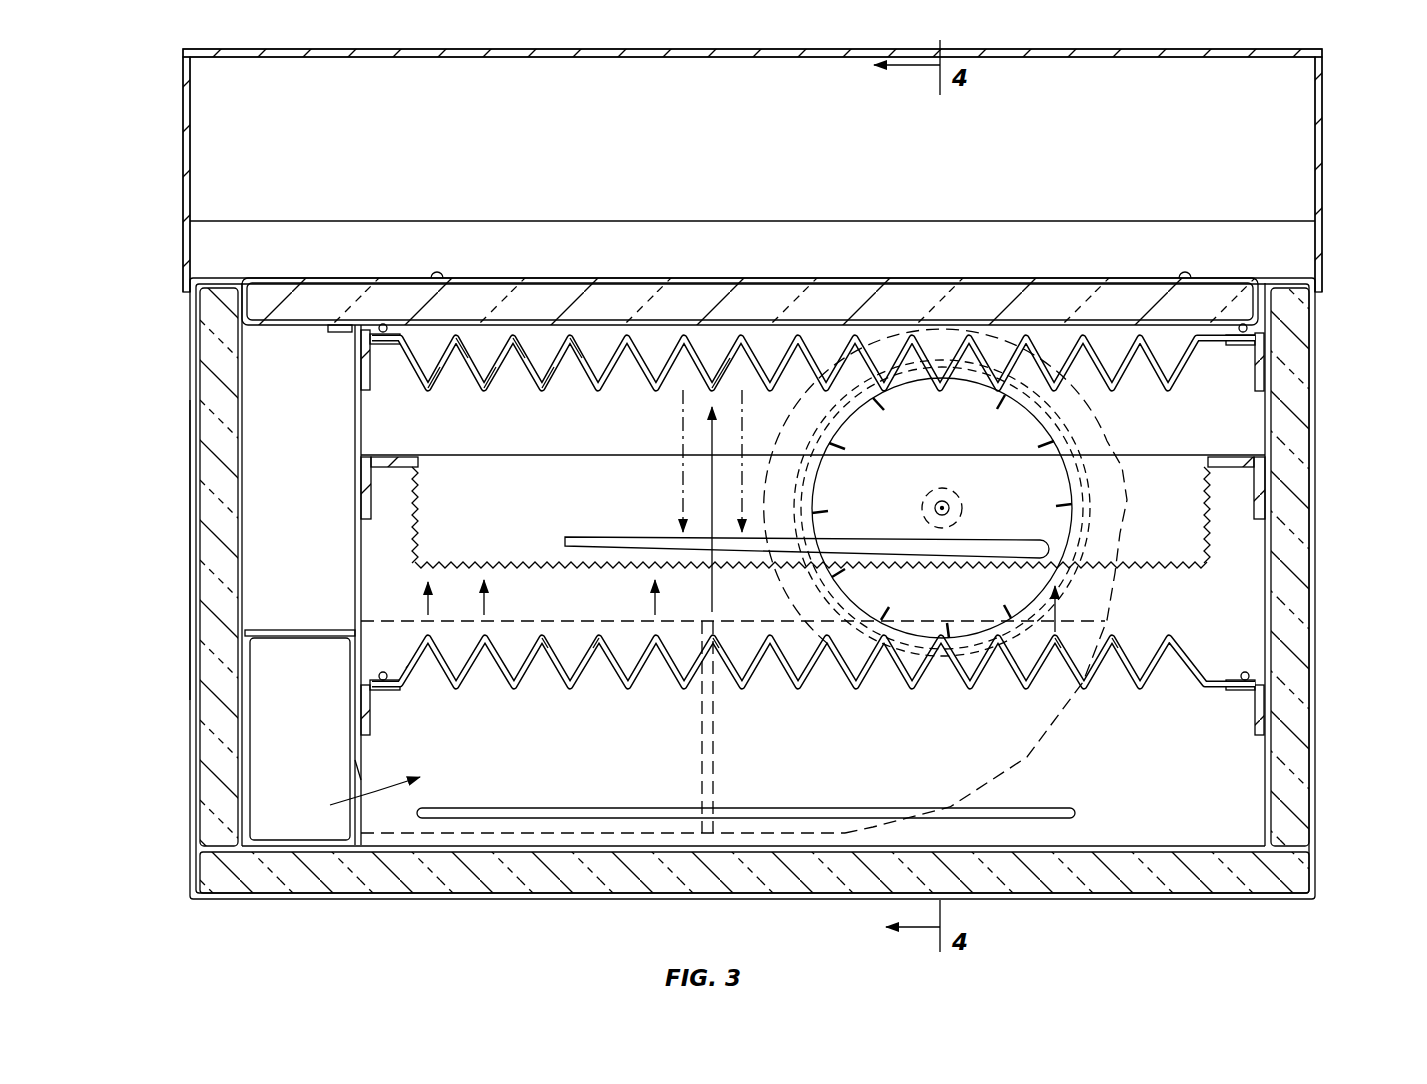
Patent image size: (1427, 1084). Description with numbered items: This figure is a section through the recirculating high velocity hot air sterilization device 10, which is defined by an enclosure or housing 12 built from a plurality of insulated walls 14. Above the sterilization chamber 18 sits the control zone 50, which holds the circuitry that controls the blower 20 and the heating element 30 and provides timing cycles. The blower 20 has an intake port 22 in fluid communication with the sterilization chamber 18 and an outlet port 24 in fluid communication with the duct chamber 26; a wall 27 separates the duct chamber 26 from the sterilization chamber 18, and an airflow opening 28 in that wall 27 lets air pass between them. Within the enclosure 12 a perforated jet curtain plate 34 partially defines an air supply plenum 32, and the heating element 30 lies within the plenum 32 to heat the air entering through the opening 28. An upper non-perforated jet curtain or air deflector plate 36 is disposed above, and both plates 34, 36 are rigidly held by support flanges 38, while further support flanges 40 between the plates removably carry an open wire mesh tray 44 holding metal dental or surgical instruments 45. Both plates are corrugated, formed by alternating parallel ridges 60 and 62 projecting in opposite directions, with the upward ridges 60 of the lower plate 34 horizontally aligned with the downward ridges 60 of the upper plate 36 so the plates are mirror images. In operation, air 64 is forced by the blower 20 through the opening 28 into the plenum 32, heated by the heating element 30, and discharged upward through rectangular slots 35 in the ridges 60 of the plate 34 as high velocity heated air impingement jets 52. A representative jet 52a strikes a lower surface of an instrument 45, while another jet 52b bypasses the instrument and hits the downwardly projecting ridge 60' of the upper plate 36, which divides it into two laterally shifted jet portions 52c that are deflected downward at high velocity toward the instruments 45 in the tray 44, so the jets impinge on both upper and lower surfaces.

The recirculating high velocity hot air sterilization device 10 is at (1340, 224).
The enclosure or housing 12 is at (188, 535).
The walls 14 is at (613, 283).
The sterilization chamber 18 is at (466, 452).
The blower 20 is at (1110, 430).
The intake port 22 is at (995, 514).
The outlet port 24 is at (700, 778).
The duct chamber 26 is at (287, 745).
The wall 27 is at (355, 416).
The airflow opening 28 is at (361, 776).
The heating element 30 is at (1080, 813).
The air supply plenum 32 is at (1090, 762).
The perforated jet curtain plate 34 is at (1184, 642).
The rectangular slots 35 is at (596, 637).
The upper non-perforated jet curtain or air deflector plate 36 is at (1181, 394).
The support flanges 38 is at (370, 378).
The support flanges 40 is at (368, 505).
The open wire mesh tray 44 is at (1202, 569).
The metal dental or surgical instruments 45 is at (830, 538).
The control zone 50 is at (679, 153).
The heated air impingement jets 52 is at (425, 598).
The representative jet 52a is at (652, 598).
The representative jet 52b is at (712, 600).
The jet portions 52c is at (681, 420).
The ridges 60 is at (540, 519).
The downwardly projecting ridge 60' is at (736, 316).
The ridges 62 is at (467, 350).
The air 64 is at (372, 800).